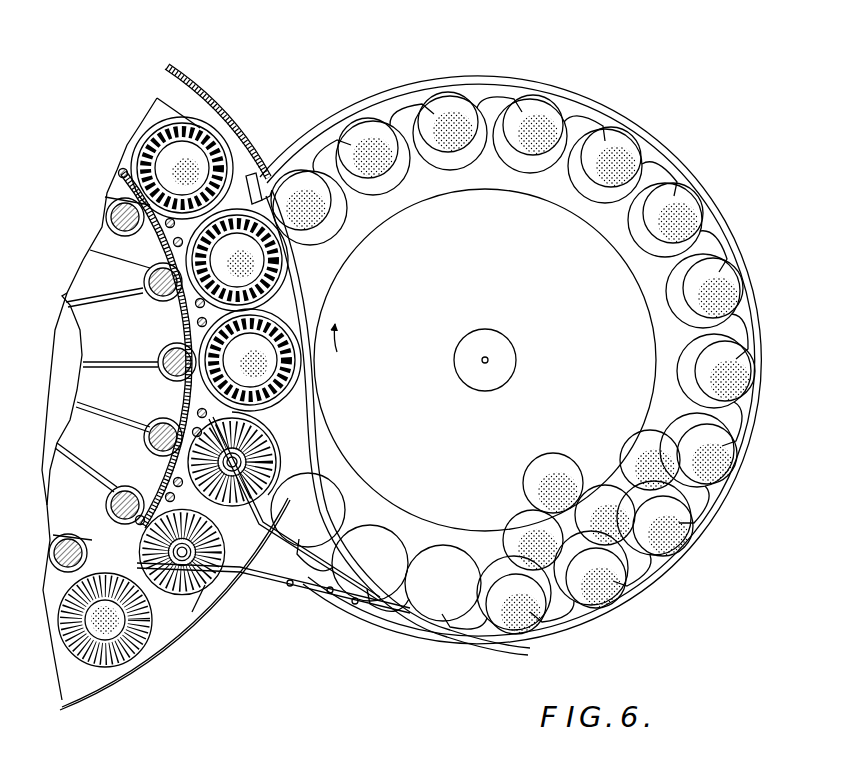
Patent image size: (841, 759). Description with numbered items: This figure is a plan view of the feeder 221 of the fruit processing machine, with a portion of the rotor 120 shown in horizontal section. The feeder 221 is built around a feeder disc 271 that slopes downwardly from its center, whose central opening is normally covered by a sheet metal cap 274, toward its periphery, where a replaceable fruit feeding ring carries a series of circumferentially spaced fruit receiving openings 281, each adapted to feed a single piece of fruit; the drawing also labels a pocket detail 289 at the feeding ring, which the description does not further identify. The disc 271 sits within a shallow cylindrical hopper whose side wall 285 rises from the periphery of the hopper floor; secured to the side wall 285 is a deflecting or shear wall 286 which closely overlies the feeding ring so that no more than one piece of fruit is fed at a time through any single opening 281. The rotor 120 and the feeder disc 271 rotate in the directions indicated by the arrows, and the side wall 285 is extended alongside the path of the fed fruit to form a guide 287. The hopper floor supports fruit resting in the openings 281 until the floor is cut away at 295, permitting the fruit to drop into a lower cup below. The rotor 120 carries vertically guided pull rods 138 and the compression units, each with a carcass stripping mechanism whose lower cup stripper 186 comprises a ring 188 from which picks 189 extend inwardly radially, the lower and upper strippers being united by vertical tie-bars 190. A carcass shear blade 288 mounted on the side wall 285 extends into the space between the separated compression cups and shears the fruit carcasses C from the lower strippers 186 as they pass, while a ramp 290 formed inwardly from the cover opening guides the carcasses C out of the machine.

The feeder 221 is at (701, 68).
The ball pocket 289 is at (694, 173).
The side wall 285 is at (753, 306).
The feeder disc 271 is at (510, 286).
The sheet metal cap 274 is at (508, 362).
The deflecting or shear wall 286 is at (313, 404).
The cut away 295 is at (278, 425).
The fruit receiving openings 281 is at (376, 539).
The pull rods 138 is at (128, 232).
The vertical tie-bars 190 is at (190, 314).
The rotor 120 is at (124, 330).
The guide 287 is at (160, 465).
The carcass shear blade 288 is at (218, 589).
The fruit carcasses C is at (193, 612).
The lower cup stripper 186 is at (161, 623).
The picks 189 is at (93, 660).
The ring 188 is at (132, 662).
The ramp 290 is at (168, 652).